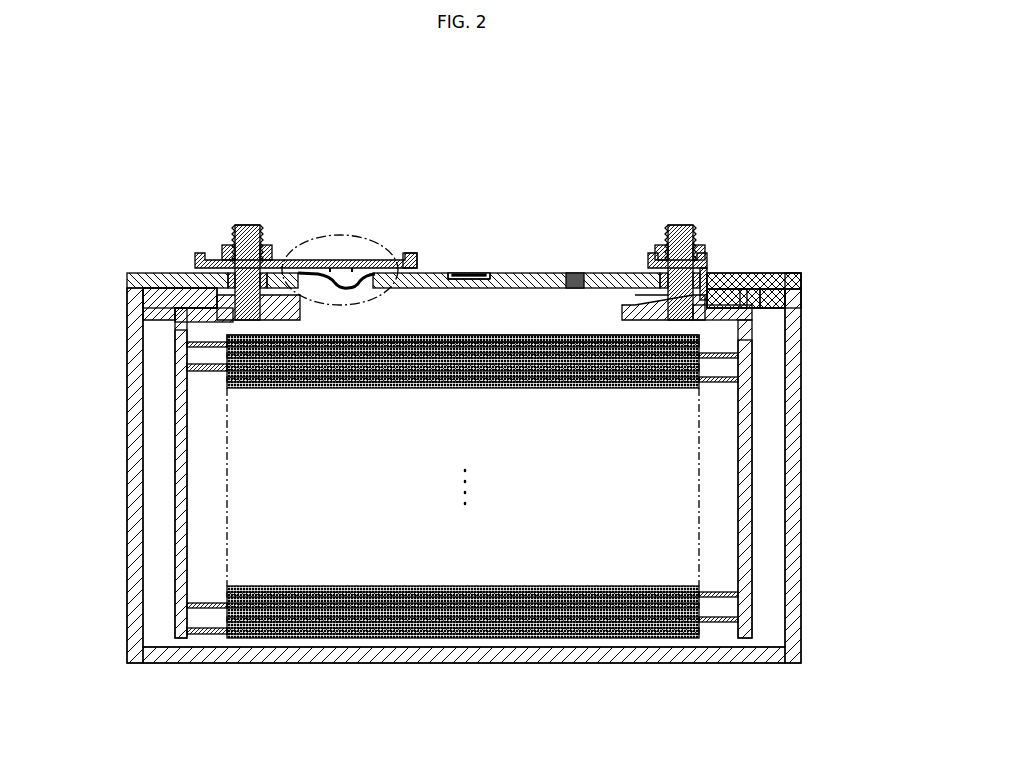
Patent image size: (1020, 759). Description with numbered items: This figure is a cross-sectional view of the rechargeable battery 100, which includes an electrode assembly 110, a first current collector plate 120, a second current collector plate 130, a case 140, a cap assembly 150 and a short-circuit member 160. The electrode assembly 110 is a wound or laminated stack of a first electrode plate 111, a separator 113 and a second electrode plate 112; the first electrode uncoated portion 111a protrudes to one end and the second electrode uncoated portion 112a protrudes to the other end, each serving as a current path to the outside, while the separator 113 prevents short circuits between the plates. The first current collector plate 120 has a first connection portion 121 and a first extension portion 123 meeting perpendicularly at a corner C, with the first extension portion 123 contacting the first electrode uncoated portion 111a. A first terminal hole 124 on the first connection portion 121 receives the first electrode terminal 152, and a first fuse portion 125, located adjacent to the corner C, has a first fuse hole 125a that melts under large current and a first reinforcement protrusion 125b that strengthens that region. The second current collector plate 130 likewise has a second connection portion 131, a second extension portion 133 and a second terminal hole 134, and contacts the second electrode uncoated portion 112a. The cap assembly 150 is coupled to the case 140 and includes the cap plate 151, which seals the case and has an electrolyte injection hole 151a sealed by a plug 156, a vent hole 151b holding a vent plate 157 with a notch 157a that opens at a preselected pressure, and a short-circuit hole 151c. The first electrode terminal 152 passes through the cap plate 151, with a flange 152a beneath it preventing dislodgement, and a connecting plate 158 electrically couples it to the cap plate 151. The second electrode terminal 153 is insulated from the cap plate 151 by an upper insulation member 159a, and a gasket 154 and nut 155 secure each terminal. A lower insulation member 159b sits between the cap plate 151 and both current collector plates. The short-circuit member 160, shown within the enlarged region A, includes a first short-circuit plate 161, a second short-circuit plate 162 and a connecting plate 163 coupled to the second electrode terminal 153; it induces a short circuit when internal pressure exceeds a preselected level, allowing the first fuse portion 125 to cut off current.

The rechargeable battery 100 is at (763, 147).
The electrode assembly 110 is at (548, 641).
The first electrode plate 111 is at (622, 622).
The first electrode uncoated portion 111a is at (715, 623).
The second electrode plate 112 is at (345, 635).
The second electrode uncoated portion 112a is at (205, 634).
The separator 113 is at (478, 612).
The first current collector plate 120 is at (755, 432).
The first connection portion 121 is at (716, 284).
The first extension portion 123 is at (749, 490).
The first terminal hole 124 is at (700, 322).
The first fuse portion 125 is at (823, 220).
The first fuse hole 125a is at (762, 294).
The first reinforcement protrusion 125b is at (746, 300).
The second current collector plate 130 is at (173, 425).
The second connection portion 131 is at (212, 298).
The second extension portion 133 is at (182, 512).
The second terminal hole 134 is at (205, 321).
The case 140 is at (797, 378).
The cap assembly 150 is at (466, 231).
The cap plate 151 is at (538, 273).
The electrolyte injection hole 151a is at (562, 290).
The vent hole 151b is at (465, 290).
The short-circuit hole 151c is at (376, 270).
The first electrode terminal 152 is at (680, 225).
The flange 152a is at (626, 310).
The second electrode terminal 153 is at (247, 225).
The gasket 154 is at (213, 262).
The nut 155 is at (266, 246).
The plug 156 is at (578, 273).
The vent plate 157 is at (488, 273).
The notch 157a is at (462, 273).
The connecting plate 158 is at (712, 270).
The upper insulation member 159a is at (411, 257).
The lower insulation member 159b is at (162, 300).
The short-circuit member 160 is at (362, 255).
The first short-circuit plate 161 is at (352, 262).
The second short-circuit plate 162 is at (350, 291).
The connecting plate 163 is at (330, 262).
The enlarged region A is at (328, 250).
The corner C is at (788, 287).